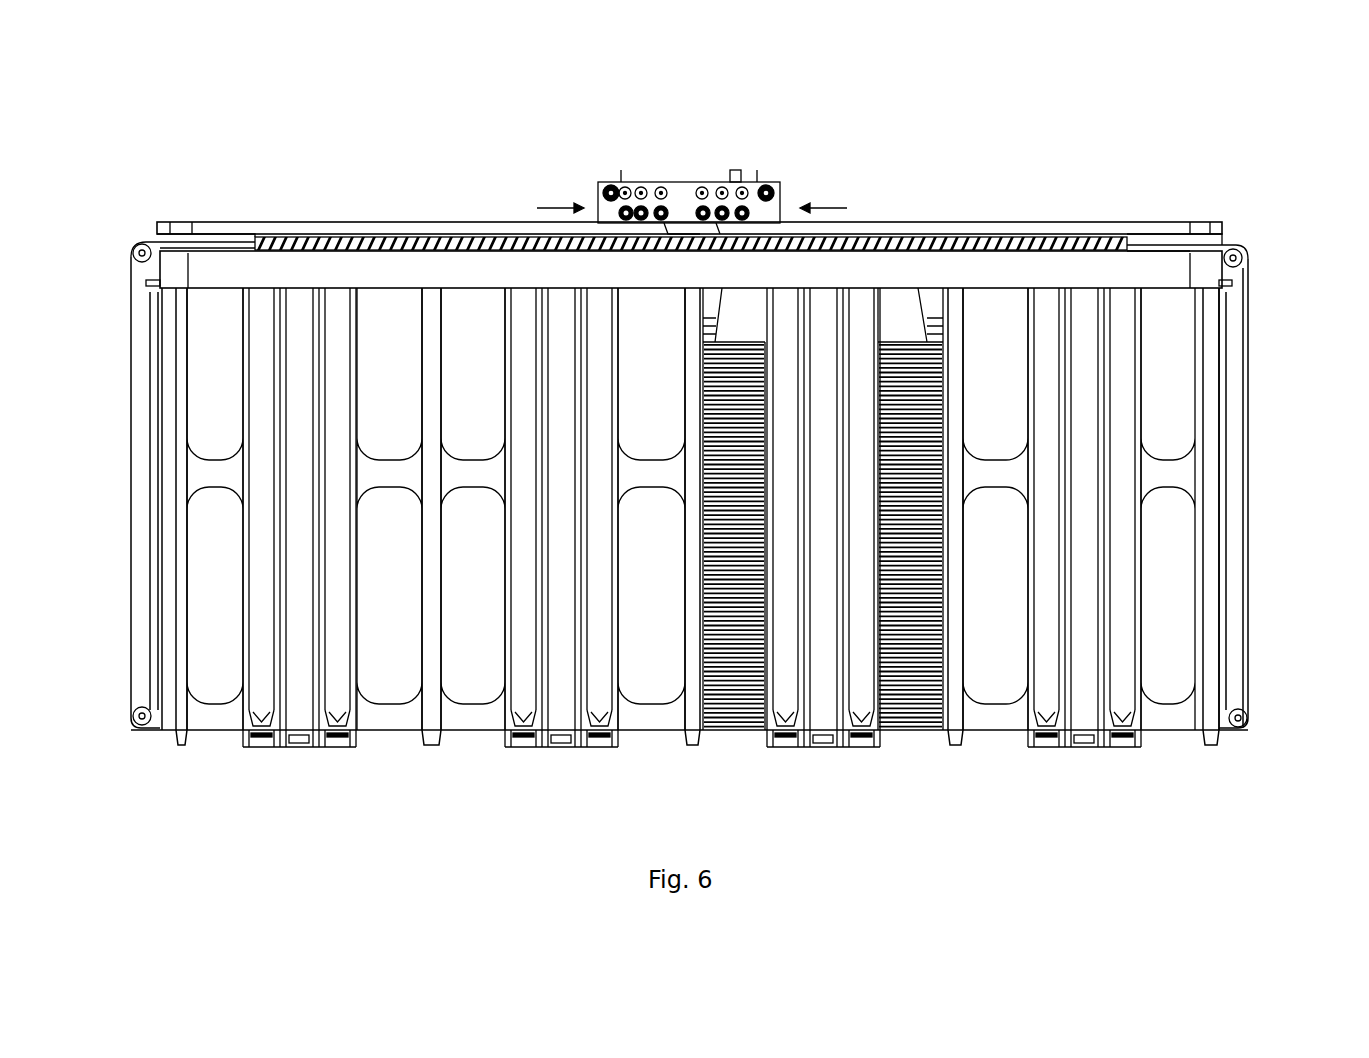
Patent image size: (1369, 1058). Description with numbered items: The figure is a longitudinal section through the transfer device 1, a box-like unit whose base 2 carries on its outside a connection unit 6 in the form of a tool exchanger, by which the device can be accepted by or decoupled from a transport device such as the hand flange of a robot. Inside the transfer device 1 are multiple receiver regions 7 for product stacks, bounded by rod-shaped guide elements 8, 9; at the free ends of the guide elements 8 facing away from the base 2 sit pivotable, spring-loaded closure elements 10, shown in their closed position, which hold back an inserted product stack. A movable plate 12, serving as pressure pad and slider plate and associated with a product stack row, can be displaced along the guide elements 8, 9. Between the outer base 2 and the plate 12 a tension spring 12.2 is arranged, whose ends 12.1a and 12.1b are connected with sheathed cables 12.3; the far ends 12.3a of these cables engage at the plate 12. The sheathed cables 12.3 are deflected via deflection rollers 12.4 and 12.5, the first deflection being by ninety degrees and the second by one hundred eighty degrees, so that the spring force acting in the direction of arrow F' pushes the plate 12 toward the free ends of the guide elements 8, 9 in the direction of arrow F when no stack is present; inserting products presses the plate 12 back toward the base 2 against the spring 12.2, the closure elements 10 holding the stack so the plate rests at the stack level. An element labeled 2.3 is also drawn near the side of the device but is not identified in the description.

The transfer device 1 is at (1244, 146).
The base 2 is at (312, 222).
The side wall 2.3 is at (132, 428).
The connection unit 6 is at (683, 190).
The receiver regions 7 is at (728, 763).
The guide elements 8 is at (258, 682).
The guide elements 9 is at (441, 705).
The closure elements 10 is at (262, 748).
The plate 12 is at (1072, 272).
The end of the draw spring 12.1a is at (255, 242).
The end of the draw spring 12.1b is at (1117, 243).
The tension spring 12.2 is at (450, 237).
The sheathed cables 12.3 is at (1250, 595).
The ends of the sheathed cables 12.3a is at (146, 283).
The deflection roller 12.4 is at (140, 248).
The deflection roller 12.5 is at (140, 712).